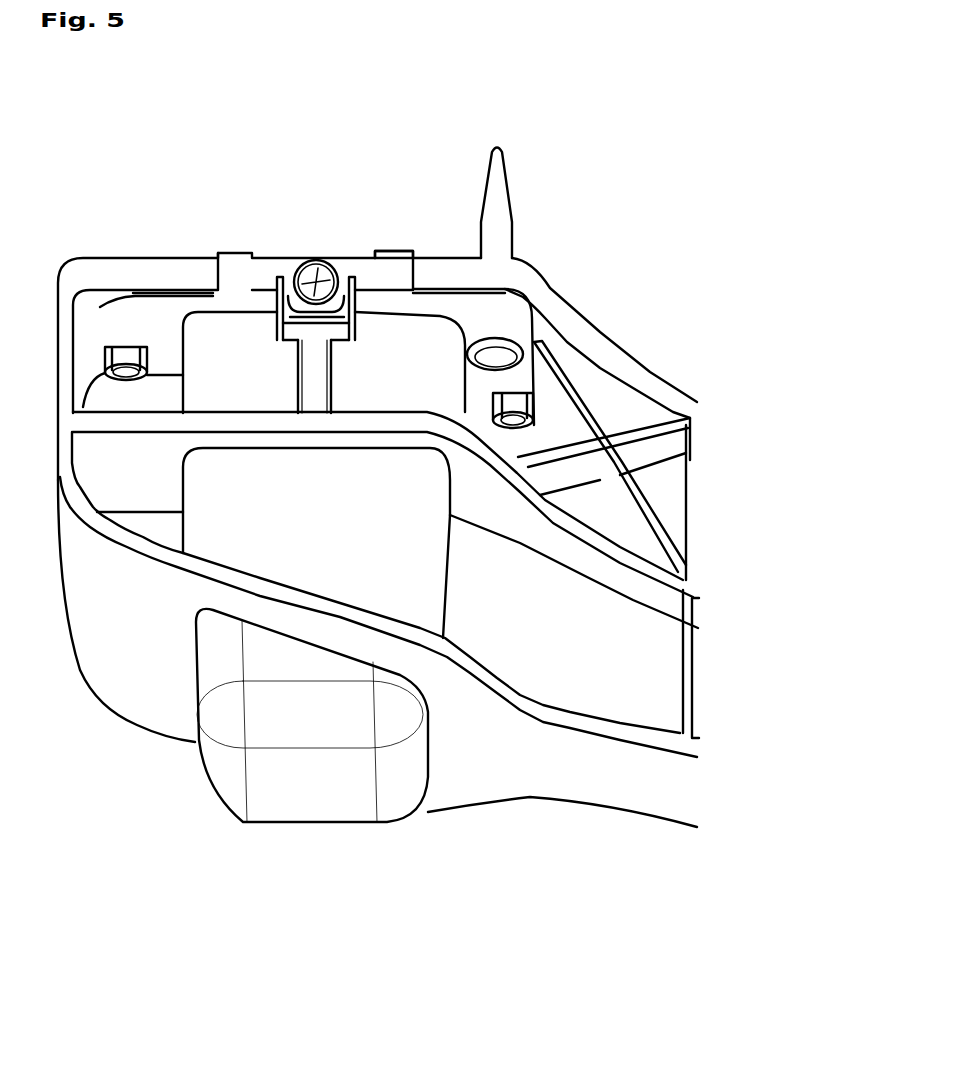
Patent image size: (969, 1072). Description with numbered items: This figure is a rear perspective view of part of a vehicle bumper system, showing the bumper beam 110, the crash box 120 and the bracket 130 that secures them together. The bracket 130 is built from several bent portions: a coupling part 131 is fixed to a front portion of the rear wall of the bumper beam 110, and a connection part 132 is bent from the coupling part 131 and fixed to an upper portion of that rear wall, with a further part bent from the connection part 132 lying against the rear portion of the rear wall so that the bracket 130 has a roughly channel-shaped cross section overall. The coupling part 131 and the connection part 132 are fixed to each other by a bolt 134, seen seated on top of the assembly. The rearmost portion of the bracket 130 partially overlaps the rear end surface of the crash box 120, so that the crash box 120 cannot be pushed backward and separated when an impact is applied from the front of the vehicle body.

The bumper beam 110 is at (663, 660).
The crash box 120 is at (322, 797).
The bracket 130 is at (412, 137).
The coupling part 131 is at (157, 312).
The connection part 132 is at (390, 272).
The bolt 134 is at (310, 277).